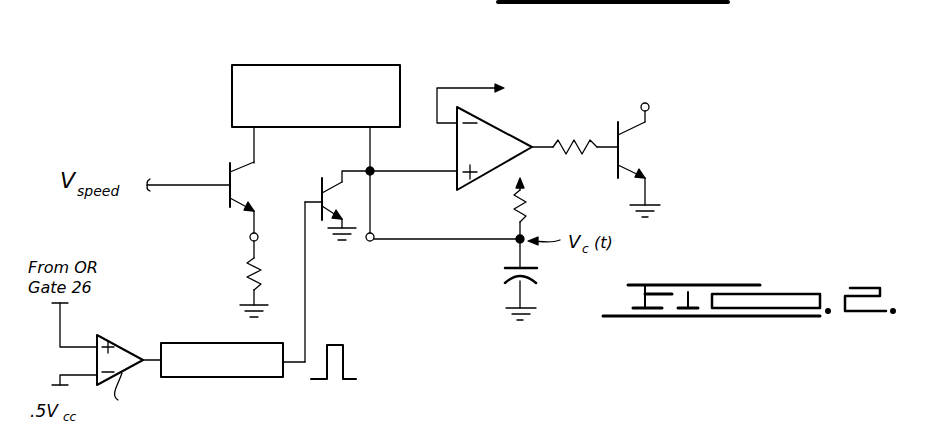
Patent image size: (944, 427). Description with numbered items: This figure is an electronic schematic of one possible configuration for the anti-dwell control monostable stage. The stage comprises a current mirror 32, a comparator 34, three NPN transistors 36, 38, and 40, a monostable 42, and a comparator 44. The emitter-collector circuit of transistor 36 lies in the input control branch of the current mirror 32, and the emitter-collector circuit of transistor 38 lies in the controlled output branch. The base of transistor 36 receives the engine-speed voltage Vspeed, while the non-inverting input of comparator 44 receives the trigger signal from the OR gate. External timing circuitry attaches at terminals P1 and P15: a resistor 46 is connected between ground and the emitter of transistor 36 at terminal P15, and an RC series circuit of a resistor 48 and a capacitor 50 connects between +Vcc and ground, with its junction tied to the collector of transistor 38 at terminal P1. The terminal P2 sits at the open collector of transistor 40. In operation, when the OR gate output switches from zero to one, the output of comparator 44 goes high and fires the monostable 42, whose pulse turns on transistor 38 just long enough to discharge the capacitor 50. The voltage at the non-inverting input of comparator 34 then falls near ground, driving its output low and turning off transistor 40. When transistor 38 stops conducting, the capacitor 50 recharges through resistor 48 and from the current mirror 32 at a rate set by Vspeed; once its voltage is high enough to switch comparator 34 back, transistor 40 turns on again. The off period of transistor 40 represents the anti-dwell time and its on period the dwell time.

The current mirror 32 is at (265, 37).
The comparator 34 is at (507, 133).
The transistor 36 is at (246, 201).
The transistor 38 is at (318, 180).
The transistor 40 is at (623, 169).
The monostable 42 is at (258, 378).
The comparator 44 is at (117, 346).
The resistor 46 is at (246, 282).
The resistor 48 is at (514, 208).
The capacitor 50 is at (505, 272).
The terminal P1 is at (368, 243).
The terminal P15 is at (259, 236).
The terminal P2 is at (649, 102).